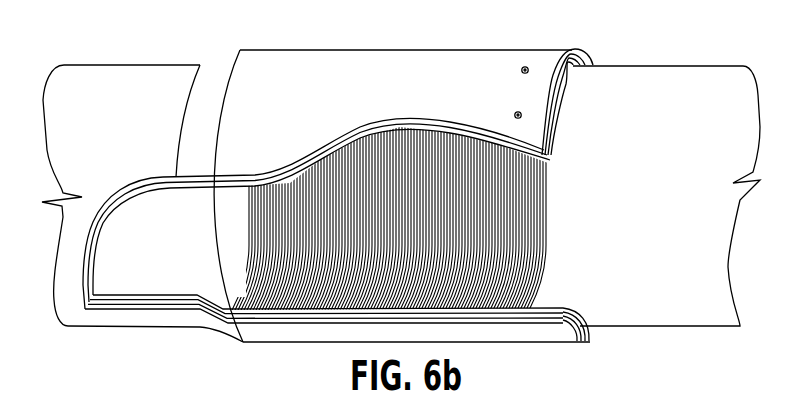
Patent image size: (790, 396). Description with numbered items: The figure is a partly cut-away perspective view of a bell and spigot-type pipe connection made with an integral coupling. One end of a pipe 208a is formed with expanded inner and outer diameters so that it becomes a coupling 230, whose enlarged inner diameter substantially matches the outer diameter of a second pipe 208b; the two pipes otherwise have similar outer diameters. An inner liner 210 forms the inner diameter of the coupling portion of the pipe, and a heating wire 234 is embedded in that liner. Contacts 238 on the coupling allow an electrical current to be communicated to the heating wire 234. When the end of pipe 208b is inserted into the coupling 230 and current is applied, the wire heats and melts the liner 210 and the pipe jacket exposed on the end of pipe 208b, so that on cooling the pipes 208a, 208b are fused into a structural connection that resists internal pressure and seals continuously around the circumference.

The pipe 208a is at (108, 84).
The pipe 208b is at (635, 82).
The coupling 230 is at (272, 67).
The contacts 238 is at (521, 71).
The heating wire 234 is at (353, 294).
The inner liner 210 is at (550, 308).